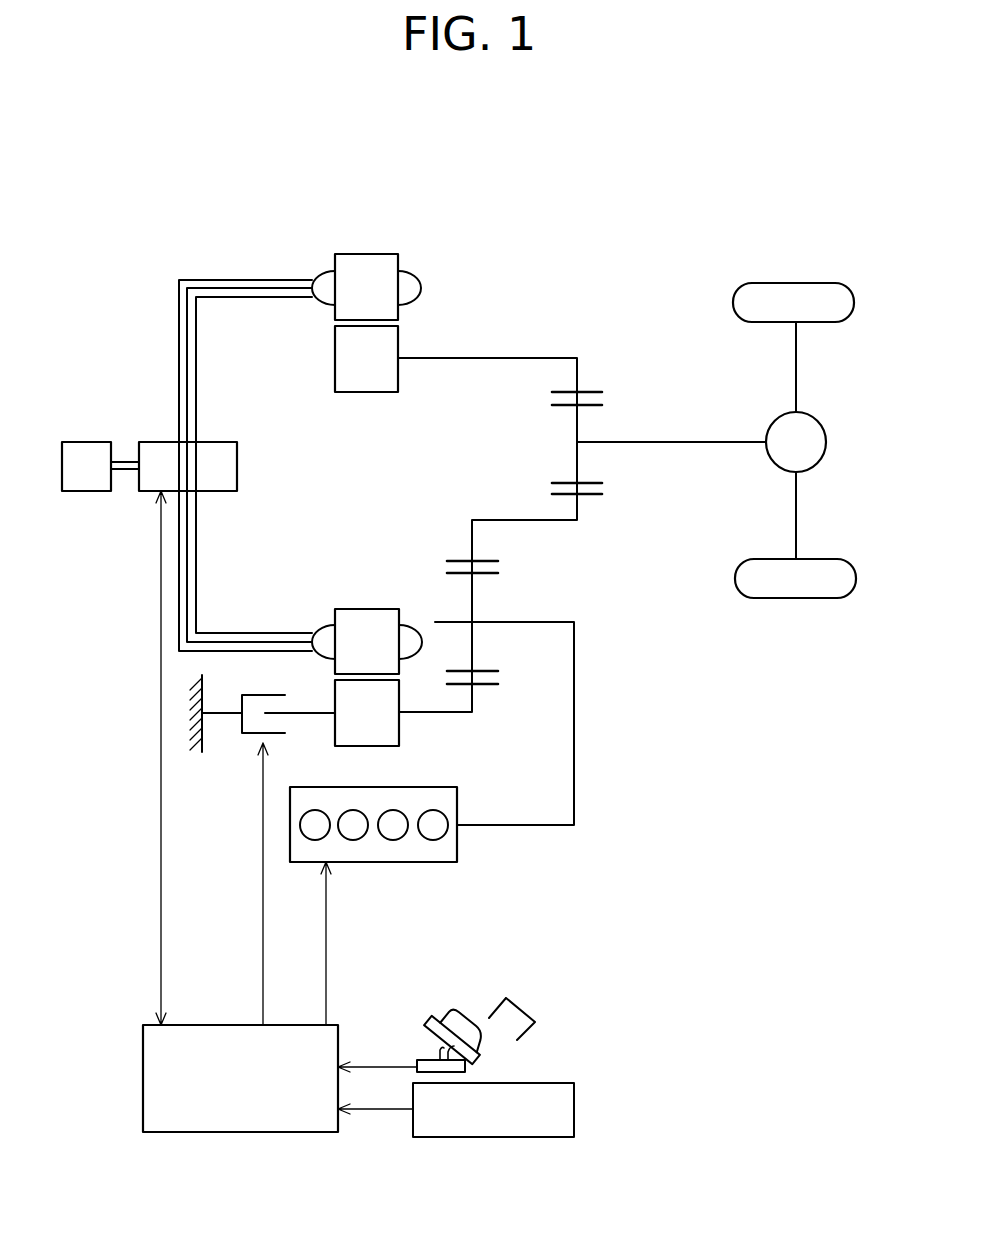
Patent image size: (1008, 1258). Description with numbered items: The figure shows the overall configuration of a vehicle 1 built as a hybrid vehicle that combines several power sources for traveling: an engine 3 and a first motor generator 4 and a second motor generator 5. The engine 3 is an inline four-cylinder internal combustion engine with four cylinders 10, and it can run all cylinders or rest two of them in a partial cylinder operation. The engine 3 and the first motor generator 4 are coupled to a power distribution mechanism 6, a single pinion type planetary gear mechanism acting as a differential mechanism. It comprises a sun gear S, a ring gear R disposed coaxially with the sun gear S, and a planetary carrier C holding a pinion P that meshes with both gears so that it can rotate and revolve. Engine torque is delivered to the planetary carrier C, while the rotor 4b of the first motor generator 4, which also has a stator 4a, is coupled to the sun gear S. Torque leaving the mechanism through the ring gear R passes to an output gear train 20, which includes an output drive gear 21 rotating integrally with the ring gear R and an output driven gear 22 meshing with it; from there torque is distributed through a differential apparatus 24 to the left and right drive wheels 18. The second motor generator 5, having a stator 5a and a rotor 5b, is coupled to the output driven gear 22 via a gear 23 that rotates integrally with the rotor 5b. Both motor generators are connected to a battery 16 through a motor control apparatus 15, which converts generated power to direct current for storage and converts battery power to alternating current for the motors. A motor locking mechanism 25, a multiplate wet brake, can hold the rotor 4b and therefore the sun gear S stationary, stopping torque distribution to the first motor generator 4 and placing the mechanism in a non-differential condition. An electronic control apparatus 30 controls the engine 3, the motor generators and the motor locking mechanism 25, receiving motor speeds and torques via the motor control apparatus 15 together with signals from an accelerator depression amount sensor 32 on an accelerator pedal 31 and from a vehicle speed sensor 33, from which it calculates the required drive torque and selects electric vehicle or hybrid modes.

The vehicle 1 is at (507, 111).
The engine 3 is at (373, 865).
The first motor generator 4 is at (376, 652).
The stator 4a is at (376, 620).
The rotor 4b is at (396, 738).
The second motor generator 5 is at (354, 280).
The stator 5a is at (373, 262).
The rotor 5b is at (345, 369).
The power distribution mechanism 6 is at (495, 621).
The cylinders 10 is at (392, 834).
The motor control apparatus 15 is at (156, 442).
The battery 16 is at (88, 442).
The drive wheels 18 is at (773, 282).
The output gear train 20 is at (522, 476).
The output drive gear 21 is at (560, 497).
The output driven gear 22 is at (560, 483).
The gear 23 is at (600, 392).
The differential apparatus 24 is at (772, 418).
The motor locking mechanism 25 is at (227, 742).
The electronic control apparatus 30 is at (208, 1025).
The accelerator pedal 31 is at (428, 1022).
The accelerator depression amount sensor 32 is at (470, 1062).
The vehicle speed sensor 33 is at (574, 1107).
The ring gear R is at (498, 558).
The pinion P is at (475, 598).
The sun gear S is at (495, 688).
The planetary carrier C is at (577, 655).